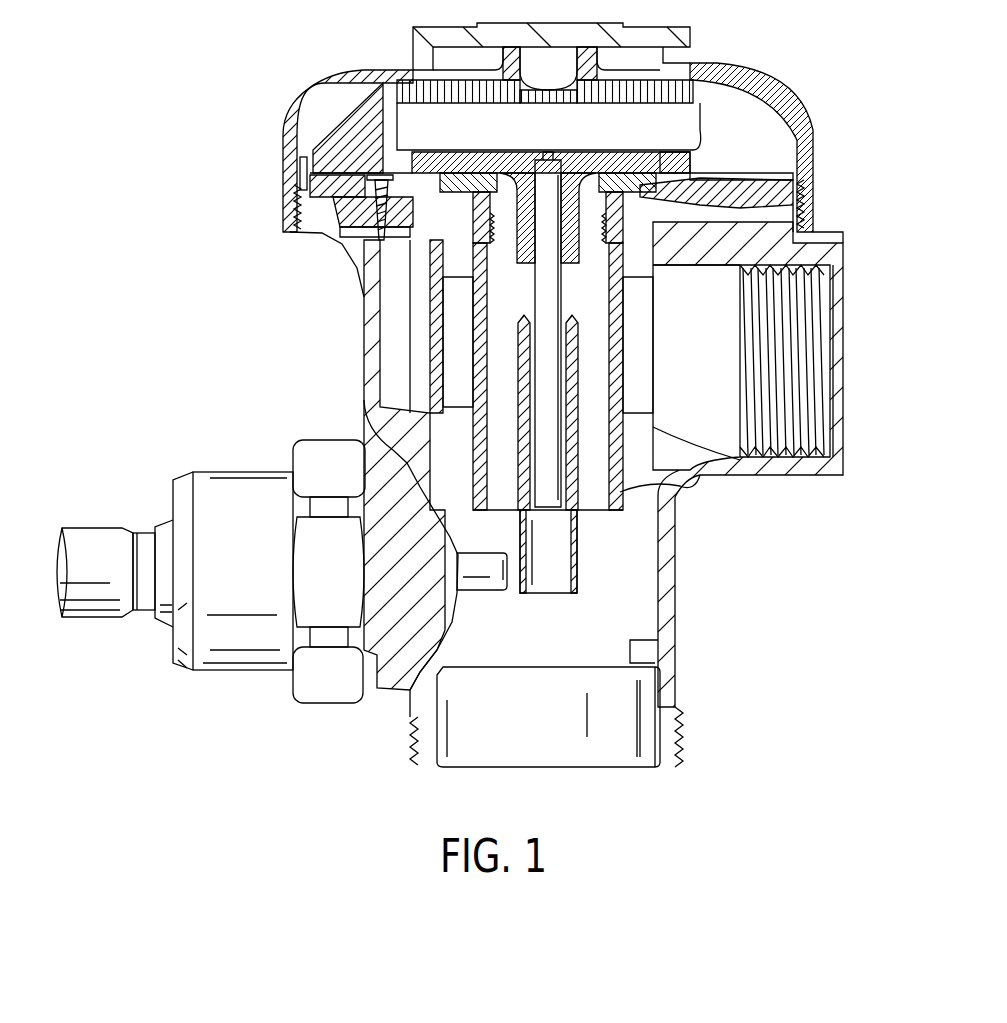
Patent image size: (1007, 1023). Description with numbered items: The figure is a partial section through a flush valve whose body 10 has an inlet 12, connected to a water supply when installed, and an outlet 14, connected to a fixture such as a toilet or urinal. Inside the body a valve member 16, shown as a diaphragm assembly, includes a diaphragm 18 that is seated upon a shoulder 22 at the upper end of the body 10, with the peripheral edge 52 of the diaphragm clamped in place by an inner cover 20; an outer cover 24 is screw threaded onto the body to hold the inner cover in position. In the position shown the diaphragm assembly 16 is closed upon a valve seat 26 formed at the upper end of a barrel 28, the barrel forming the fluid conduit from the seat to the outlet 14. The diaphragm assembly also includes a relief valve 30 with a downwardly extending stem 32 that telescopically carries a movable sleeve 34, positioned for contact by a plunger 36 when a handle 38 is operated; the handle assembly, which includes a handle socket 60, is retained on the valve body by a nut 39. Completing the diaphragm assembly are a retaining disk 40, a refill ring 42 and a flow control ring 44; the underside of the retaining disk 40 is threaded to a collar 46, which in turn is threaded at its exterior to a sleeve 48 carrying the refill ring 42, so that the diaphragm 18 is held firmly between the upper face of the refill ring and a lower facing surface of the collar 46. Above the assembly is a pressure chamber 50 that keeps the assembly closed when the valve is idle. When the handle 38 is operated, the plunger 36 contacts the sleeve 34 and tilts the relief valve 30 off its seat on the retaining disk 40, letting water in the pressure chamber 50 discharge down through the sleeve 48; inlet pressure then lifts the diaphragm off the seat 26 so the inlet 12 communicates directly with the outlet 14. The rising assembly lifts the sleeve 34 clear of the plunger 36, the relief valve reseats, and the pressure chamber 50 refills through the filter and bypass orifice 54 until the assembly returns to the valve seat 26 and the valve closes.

The body 10 is at (680, 608).
The inlet 12 is at (782, 330).
The outlet 14 is at (493, 770).
The valve member 16 is at (729, 164).
The diaphragm 18 is at (748, 197).
The inner cover 20 is at (718, 108).
The shoulder 22 is at (782, 175).
The outer cover 24 is at (363, 68).
The valve seat 26 is at (697, 222).
The barrel 28 is at (670, 293).
The relief valve 30 is at (613, 150).
The stem 32 is at (560, 463).
The movable sleeve 34 is at (575, 595).
The plunger 36 is at (478, 590).
The handle 38 is at (92, 527).
The nut 39 is at (328, 705).
The retaining disk 40 is at (675, 150).
The refill ring 42 is at (450, 276).
The flow control ring 44 is at (640, 413).
The collar 46 is at (600, 227).
The sleeve 48 is at (620, 492).
The pressure chamber 50 is at (465, 137).
The peripheral edge 52 is at (313, 180).
The filter and bypass orifice 54 is at (383, 252).
The handle socket 60 is at (245, 470).